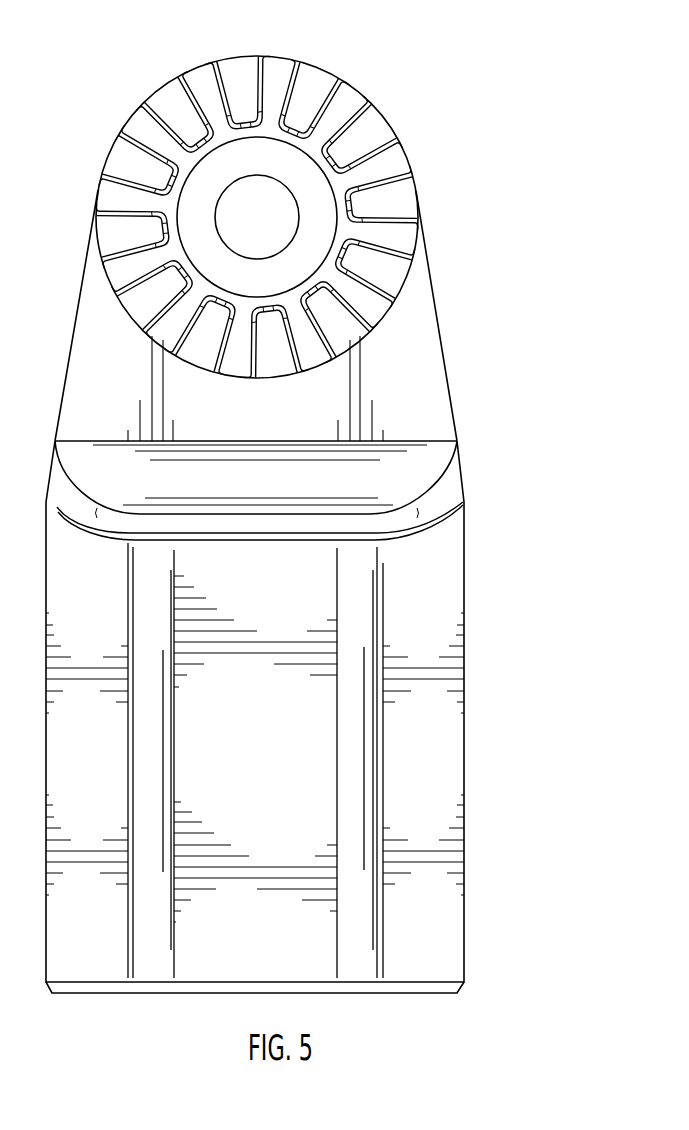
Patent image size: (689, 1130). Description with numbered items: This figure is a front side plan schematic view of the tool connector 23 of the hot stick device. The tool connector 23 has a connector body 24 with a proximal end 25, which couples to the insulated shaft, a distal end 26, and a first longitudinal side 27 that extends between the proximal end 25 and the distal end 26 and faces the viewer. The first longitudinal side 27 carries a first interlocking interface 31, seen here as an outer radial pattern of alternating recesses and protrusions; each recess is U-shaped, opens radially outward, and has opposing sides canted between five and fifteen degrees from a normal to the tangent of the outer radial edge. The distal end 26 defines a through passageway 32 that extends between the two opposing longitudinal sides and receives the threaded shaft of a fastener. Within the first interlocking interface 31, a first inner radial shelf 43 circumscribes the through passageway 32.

The tool connector 23 is at (486, 144).
The connector body 24 is at (462, 454).
The proximal end 25 is at (433, 732).
The distal end 26 is at (407, 323).
The first longitudinal side 27 is at (268, 468).
The first interlocking interface 31 is at (157, 242).
The through passageway 32 is at (259, 202).
The first inner radial shelf 43 is at (307, 193).